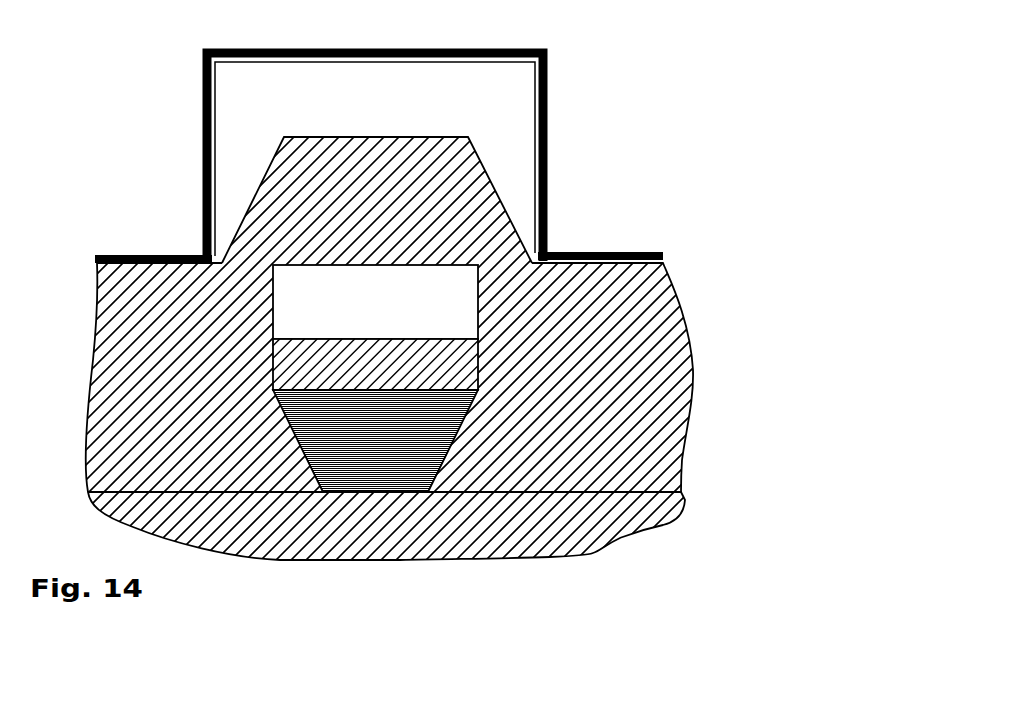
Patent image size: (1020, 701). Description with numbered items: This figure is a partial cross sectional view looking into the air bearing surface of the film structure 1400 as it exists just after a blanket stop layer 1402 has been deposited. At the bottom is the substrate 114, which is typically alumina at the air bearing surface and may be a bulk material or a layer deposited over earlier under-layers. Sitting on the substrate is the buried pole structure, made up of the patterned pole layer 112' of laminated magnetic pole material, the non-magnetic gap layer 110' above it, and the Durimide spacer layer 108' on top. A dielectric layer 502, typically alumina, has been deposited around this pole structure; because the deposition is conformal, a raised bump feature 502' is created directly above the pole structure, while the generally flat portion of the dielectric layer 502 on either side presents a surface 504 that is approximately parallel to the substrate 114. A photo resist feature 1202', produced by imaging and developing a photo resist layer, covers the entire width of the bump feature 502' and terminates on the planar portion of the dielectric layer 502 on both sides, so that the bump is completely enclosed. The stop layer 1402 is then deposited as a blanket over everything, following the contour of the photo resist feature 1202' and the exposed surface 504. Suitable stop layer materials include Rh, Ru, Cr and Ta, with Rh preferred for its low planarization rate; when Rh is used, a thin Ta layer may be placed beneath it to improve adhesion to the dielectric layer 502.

The film structure 1400 is at (598, 102).
The stop layer 1402 is at (602, 252).
The photo resist feature 1202' is at (375, 159).
The bump feature 502' is at (377, 200).
The dielectric layer 502 is at (390, 348).
The surface 504 is at (148, 265).
The spacer layer 108' is at (375, 302).
The gap layer 110' is at (375, 364).
The pole layer 112' is at (375, 441).
The substrate 114 is at (412, 548).